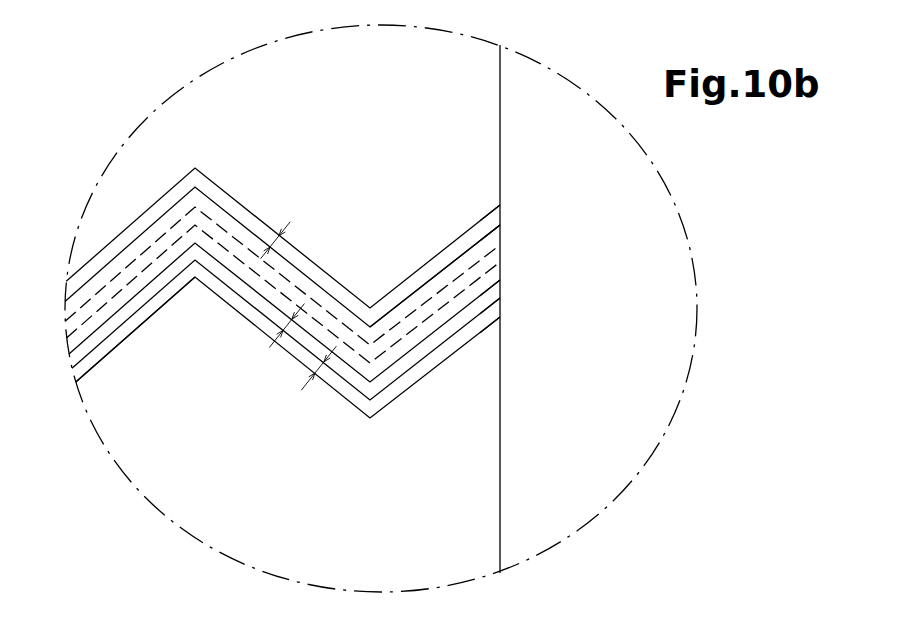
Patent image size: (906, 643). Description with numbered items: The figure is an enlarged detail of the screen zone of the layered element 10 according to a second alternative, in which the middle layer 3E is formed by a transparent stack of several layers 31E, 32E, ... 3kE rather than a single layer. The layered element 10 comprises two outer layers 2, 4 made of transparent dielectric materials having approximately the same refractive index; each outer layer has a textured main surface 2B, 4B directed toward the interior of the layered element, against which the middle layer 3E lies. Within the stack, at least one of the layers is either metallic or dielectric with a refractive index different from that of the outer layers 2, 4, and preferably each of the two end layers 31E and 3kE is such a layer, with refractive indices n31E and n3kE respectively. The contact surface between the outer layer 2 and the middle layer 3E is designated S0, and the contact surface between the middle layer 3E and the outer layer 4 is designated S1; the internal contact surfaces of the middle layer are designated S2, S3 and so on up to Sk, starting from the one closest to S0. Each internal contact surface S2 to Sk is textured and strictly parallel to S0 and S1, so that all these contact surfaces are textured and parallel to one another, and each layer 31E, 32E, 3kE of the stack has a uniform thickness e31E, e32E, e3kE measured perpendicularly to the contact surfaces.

The layered element 10 is at (68, 124).
The outer layer 4 is at (488, 100).
The outer layer 2 is at (486, 524).
The middle layer 3E is at (60, 293).
The textured main surface 4B is at (228, 211).
The textured main surface 2B is at (140, 319).
The layer of the stack 3kE is at (424, 272).
The refractive index n3kE is at (470, 240).
The thickness e3kE is at (291, 220).
The layer of the stack 32E is at (458, 325).
The thickness e32E is at (270, 348).
The layer of the stack 31E is at (411, 382).
The thickness e31E is at (301, 391).
The refractive index n31E is at (356, 407).
The contact surface S1 is at (516, 205).
The contact surface Sk is at (516, 225).
The contact surface S3 is at (516, 281).
The contact surface S2 is at (516, 299).
The contact surface S0 is at (516, 318).